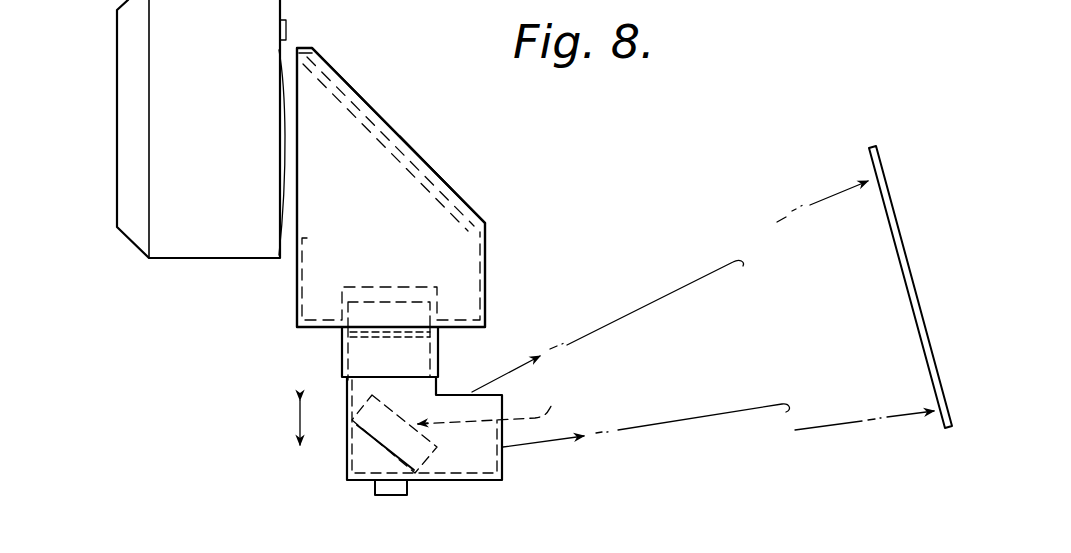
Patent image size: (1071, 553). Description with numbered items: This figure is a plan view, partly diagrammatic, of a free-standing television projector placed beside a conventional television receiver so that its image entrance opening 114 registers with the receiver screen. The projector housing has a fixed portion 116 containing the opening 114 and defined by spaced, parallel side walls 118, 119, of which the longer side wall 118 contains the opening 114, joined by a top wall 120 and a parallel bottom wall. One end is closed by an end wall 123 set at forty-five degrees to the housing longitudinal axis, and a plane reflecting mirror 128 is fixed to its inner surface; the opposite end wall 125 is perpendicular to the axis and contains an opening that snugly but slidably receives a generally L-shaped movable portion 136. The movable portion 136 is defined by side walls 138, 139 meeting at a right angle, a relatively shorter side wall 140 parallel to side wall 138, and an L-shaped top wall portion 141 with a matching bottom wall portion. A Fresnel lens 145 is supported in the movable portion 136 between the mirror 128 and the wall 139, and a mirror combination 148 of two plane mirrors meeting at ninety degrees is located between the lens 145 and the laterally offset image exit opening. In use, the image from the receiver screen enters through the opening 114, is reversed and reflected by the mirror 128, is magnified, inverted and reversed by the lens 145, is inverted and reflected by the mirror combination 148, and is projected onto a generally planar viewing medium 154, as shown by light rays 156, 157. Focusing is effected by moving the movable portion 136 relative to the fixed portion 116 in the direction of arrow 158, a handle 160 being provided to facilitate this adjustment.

The image entrance opening 114 is at (297, 135).
The fixed portion 116 is at (507, 224).
The side wall 118 is at (300, 302).
The side wall 119 is at (488, 262).
The top wall 120 is at (400, 212).
The end wall 123 is at (380, 123).
The end wall 125 is at (312, 328).
The plane reflecting mirror 128 is at (418, 172).
The movable portion 136 is at (350, 490).
The side wall 138 is at (347, 453).
The side wall 139 is at (437, 483).
The side wall 140 is at (440, 388).
The top wall portion 141 is at (482, 458).
The lens 145 is at (380, 327).
The mirror combination 148 is at (466, 426).
The viewing medium 154 is at (908, 292).
The light ray 156 is at (795, 430).
The light ray 157 is at (777, 222).
The arrow 158 is at (296, 430).
The handle 160 is at (387, 488).